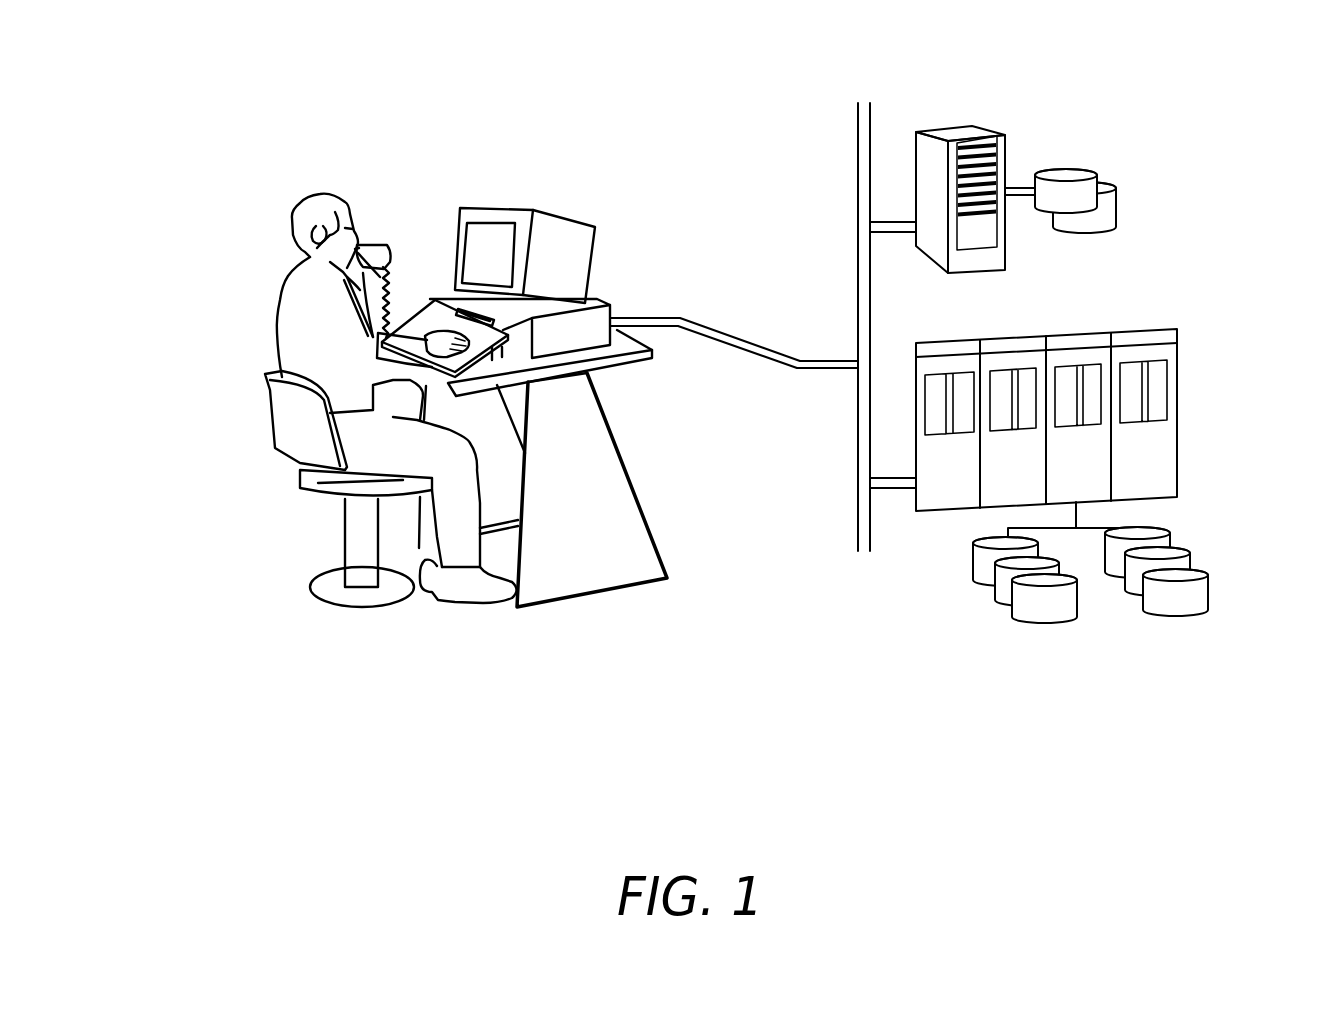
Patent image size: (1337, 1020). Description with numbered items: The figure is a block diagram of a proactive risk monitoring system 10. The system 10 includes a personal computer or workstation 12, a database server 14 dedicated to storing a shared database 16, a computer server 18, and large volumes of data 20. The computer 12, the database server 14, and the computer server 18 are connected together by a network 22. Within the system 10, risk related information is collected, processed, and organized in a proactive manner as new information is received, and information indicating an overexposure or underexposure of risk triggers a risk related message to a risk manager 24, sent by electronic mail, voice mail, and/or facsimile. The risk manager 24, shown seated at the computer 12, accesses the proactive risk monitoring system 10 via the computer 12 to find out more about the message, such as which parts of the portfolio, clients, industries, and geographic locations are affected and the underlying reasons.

The proactive risk monitoring system 10 is at (863, 718).
The personal computer or workstation 12 is at (517, 207).
The database server 14 is at (945, 130).
The shared database 16 is at (1093, 170).
The computer server 18 is at (1177, 404).
The large volumes of data 20 is at (1213, 590).
The network 22 is at (858, 273).
The risk manager 24 is at (280, 300).